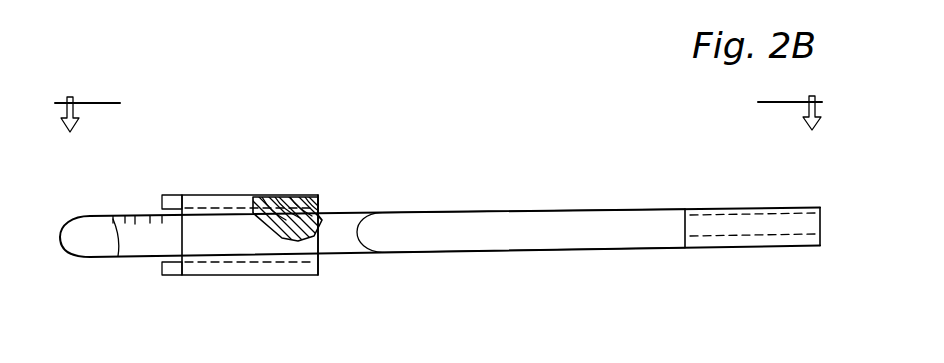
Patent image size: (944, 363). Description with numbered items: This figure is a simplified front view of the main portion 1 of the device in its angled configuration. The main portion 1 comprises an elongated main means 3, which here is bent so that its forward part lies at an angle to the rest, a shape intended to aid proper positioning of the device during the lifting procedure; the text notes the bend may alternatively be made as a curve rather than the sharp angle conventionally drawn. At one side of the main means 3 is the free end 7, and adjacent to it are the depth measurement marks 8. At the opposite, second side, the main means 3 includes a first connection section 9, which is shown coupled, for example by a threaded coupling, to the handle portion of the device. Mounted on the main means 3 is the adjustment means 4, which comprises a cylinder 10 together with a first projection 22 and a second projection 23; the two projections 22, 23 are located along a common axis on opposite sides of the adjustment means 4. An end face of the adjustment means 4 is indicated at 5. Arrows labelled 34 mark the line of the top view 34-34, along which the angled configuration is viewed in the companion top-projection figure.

The main portion 1 is at (434, 244).
The main means 3 is at (468, 237).
The adjustment means 4 is at (247, 270).
The collar end face 5 is at (320, 215).
The free end 7 is at (77, 243).
The depth measurement marks 8 is at (161, 224).
The first connection section 9 is at (783, 228).
The cylinder 10 is at (296, 194).
The first projection 22 is at (172, 195).
The second projection 23 is at (168, 278).
The view 34- 34 is at (438, 116).